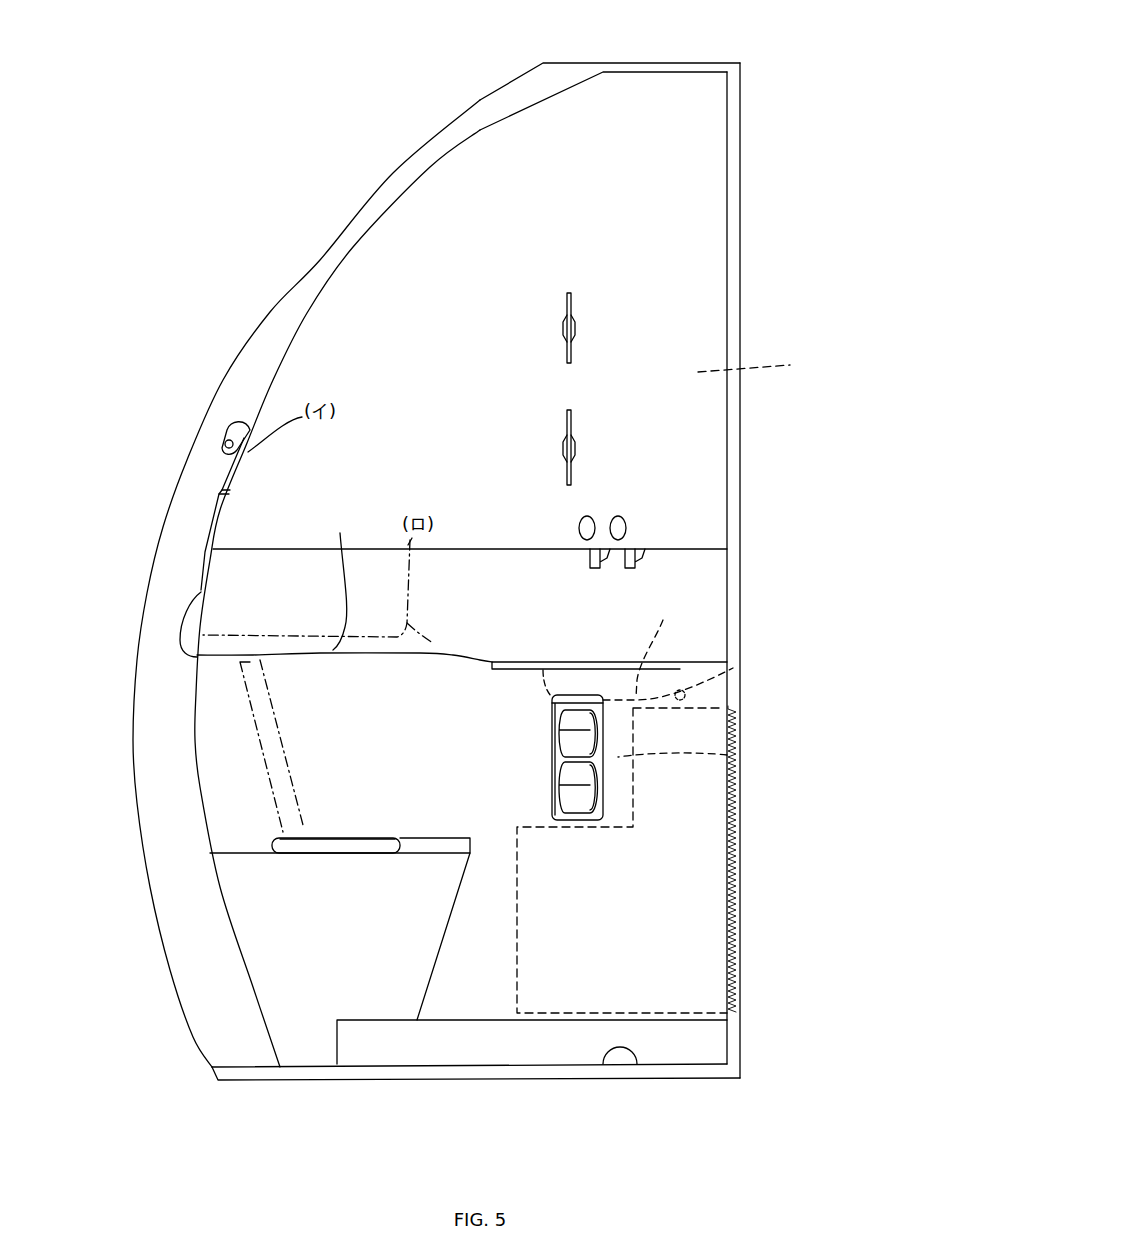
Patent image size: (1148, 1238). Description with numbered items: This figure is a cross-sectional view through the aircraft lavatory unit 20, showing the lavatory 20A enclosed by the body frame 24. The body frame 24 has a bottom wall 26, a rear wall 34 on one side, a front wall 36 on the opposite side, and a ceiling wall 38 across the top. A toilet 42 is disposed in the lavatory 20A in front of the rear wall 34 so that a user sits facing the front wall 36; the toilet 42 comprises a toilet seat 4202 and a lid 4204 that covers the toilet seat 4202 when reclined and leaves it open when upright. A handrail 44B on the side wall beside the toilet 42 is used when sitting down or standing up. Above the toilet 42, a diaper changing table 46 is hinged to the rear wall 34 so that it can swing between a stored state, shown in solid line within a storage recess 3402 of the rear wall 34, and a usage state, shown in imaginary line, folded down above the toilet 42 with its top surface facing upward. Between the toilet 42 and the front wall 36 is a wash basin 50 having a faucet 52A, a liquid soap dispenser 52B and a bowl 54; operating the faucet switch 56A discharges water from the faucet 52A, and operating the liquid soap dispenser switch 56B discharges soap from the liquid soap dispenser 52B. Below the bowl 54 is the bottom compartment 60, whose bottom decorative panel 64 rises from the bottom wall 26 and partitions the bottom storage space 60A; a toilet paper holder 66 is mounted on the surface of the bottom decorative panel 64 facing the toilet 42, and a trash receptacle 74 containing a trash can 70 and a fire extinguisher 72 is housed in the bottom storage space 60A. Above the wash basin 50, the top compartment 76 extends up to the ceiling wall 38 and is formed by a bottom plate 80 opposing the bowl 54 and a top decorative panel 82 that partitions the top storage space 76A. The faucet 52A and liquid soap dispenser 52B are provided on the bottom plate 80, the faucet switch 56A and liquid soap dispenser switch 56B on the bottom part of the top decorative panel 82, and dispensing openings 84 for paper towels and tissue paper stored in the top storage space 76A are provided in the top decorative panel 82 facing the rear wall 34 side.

The aircraft lavatory unit 20 is at (467, 560).
The lavatory 20A is at (475, 389).
The body frame 24 is at (187, 1013).
The bottom wall 26 is at (630, 1064).
The rear wall 34 is at (268, 312).
The storage recess 3402 is at (232, 433).
The front wall 36 is at (740, 278).
The ceiling wall 38 is at (663, 62).
The toilet 42 is at (343, 840).
The toilet seat 4202 is at (395, 838).
The lid 4204 is at (340, 838).
The handrail 44B is at (345, 620).
The diaper changing table 46 is at (230, 505).
The wash basin 50 is at (550, 612).
The faucet 52A is at (588, 552).
The liquid soap dispenser 52B is at (650, 552).
The bowl 54 is at (654, 645).
The faucet switch 56A is at (587, 516).
The liquid soap dispenser switch 56B is at (623, 516).
The bottom compartment 60 is at (618, 728).
The bottom storage space 60A is at (735, 755).
The bottom decorative panel 64 is at (676, 910).
The toilet paper holder 66 is at (548, 760).
The trash can 70 is at (771, 859).
The fire extinguisher 72 is at (733, 668).
The trash receptacle 74 is at (737, 860).
The top compartment 76 is at (700, 403).
The top storage space 76A is at (761, 365).
The bottom plate 80 is at (688, 550).
The top decorative panel 82 is at (676, 212).
The dispensing openings 84 is at (566, 420).